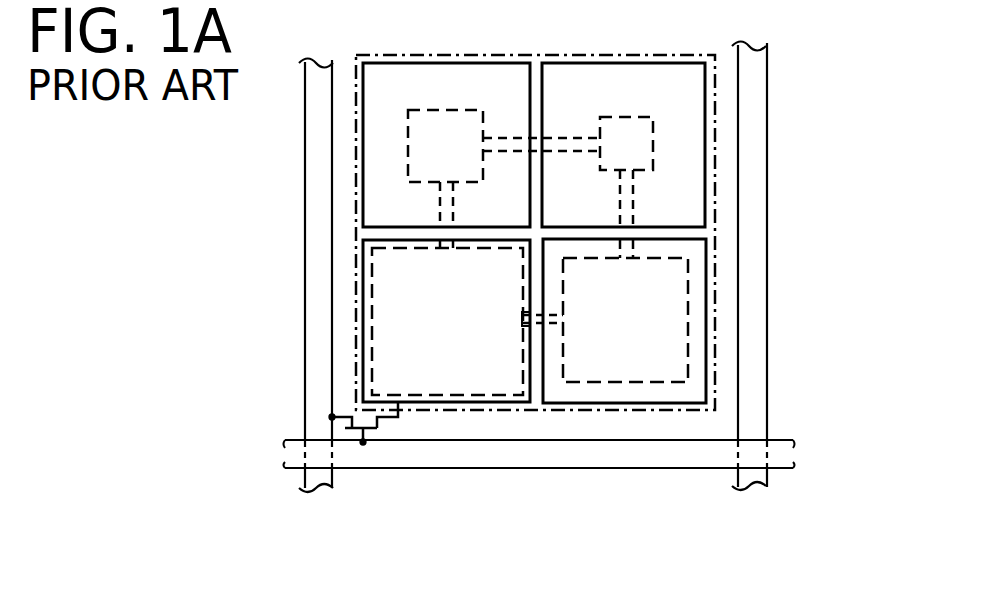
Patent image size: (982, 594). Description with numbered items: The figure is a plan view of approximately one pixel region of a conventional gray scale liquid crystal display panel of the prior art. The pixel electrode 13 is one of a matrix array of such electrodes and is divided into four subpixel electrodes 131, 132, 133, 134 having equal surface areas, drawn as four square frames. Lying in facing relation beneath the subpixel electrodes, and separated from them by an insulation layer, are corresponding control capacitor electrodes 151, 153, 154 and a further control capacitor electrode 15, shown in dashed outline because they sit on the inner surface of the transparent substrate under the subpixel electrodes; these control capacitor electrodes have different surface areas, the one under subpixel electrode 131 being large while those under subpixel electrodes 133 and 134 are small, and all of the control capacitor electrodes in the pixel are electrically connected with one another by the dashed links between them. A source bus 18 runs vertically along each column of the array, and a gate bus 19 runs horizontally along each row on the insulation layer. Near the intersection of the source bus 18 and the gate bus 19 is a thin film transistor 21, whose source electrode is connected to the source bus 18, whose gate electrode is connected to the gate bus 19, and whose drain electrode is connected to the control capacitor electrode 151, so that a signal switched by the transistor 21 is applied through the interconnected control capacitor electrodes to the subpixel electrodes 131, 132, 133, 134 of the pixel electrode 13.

The pixel electrode 13 is at (715, 143).
The subpixel electrode 131 is at (518, 405).
The subpixel electrode 132 is at (640, 403).
The subpixel electrode 133 is at (482, 60).
The subpixel electrode 134 is at (683, 57).
The control capacitor electrode 15 is at (688, 315).
The control capacitor electrode 151 is at (482, 395).
The control capacitor electrode 153 is at (423, 108).
The control capacitor electrode 154 is at (620, 117).
The source bus 18 is at (313, 215).
The gate bus 19 is at (720, 448).
The thin film transistor 21 is at (387, 427).